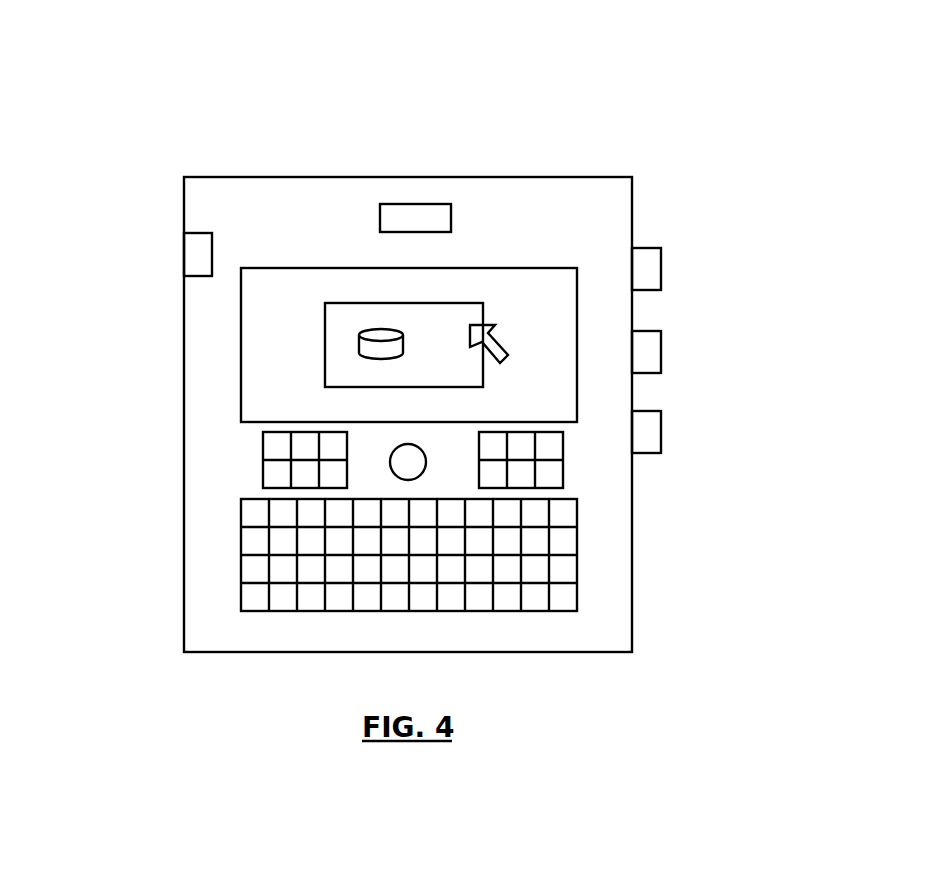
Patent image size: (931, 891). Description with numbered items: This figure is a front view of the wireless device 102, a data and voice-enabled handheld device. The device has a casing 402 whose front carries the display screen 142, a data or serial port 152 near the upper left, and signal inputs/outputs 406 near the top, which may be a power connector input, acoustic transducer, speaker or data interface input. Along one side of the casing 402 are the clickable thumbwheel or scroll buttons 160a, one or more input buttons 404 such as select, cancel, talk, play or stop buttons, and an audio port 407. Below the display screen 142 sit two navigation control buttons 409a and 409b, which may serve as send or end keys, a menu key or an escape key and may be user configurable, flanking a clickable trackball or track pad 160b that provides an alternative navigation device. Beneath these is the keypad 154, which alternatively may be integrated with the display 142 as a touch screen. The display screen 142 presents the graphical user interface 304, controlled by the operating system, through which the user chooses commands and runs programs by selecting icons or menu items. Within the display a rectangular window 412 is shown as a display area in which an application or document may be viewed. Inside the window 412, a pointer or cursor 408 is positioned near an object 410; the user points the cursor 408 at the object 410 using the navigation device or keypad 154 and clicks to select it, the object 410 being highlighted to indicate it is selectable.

The wireless device 102 is at (599, 88).
The casing 402 is at (297, 207).
The serial port 152 is at (198, 255).
The signal inputs/outputs 406 is at (422, 205).
The display screen 142 is at (241, 302).
The graphical user interface 304 is at (330, 345).
The window 412 is at (450, 318).
The object 410 is at (358, 342).
The pointer or cursor 408 is at (506, 352).
The navigation control button 409a is at (262, 443).
The navigation control button 409b is at (563, 452).
The clickable trackball or track pad 160b is at (412, 480).
The keypad 154 is at (577, 540).
The clickable thumbwheel or scroll buttons 160a is at (661, 266).
The input buttons 404 is at (661, 351).
The audio port 407 is at (661, 431).